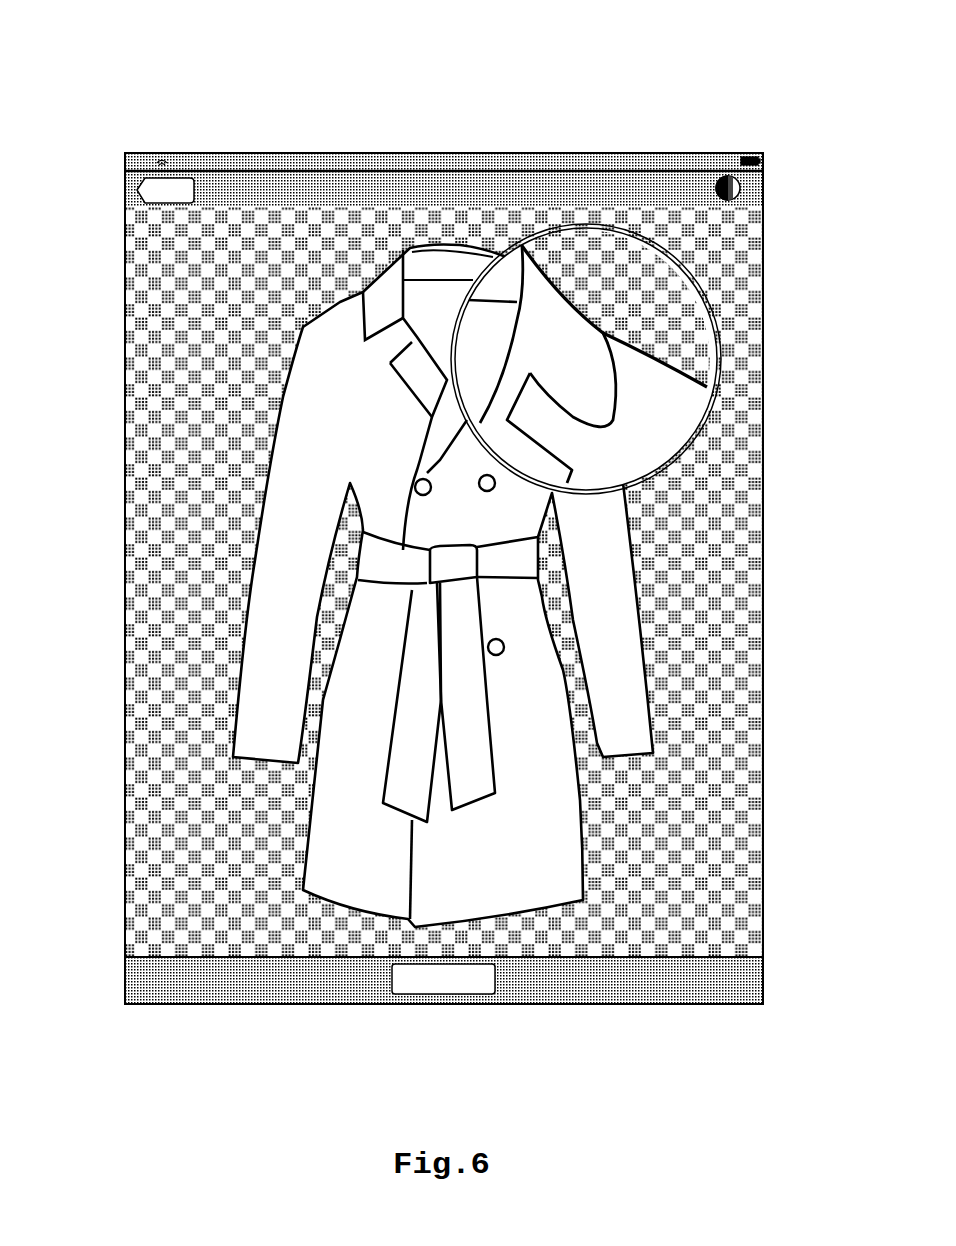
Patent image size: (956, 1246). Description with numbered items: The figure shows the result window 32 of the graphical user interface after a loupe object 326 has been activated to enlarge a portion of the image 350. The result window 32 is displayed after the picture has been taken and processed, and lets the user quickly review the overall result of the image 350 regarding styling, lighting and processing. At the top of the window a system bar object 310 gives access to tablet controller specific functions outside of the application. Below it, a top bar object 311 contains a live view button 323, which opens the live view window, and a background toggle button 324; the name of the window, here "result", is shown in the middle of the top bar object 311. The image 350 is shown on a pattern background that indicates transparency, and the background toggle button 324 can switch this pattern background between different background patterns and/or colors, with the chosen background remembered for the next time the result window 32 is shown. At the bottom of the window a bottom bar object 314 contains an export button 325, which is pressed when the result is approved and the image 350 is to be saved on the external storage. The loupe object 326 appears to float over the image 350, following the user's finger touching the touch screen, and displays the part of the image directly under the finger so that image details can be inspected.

The result window 32 is at (712, 98).
The system bar object 310 is at (553, 161).
The top bar object 311 is at (290, 186).
The bottom bar object 314 is at (694, 989).
The live view button 323 is at (148, 189).
The background toggle button 324 is at (733, 192).
The export button 325 is at (415, 991).
The loupe object 326 is at (706, 411).
The image 350 is at (118, 425).